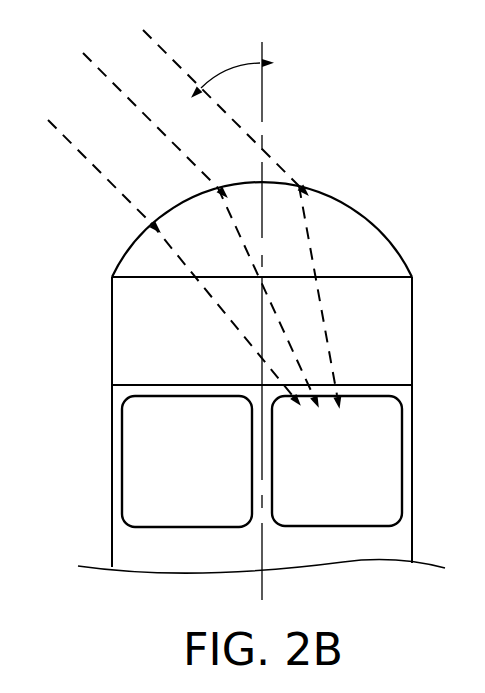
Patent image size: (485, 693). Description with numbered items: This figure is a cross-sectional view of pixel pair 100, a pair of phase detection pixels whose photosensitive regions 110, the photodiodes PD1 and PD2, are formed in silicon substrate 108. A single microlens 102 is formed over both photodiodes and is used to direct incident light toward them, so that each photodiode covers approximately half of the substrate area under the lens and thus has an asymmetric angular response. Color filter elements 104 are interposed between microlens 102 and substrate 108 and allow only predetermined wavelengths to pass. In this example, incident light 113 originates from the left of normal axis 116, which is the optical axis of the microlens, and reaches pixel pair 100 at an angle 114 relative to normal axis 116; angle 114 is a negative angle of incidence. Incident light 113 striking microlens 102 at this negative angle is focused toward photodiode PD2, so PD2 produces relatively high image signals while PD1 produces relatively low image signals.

The pixel pair 100 is at (375, 151).
The microlens 102 is at (336, 212).
The color filter elements 104 is at (128, 333).
The silicon substrate 108 is at (122, 545).
The photosensitive regions 110 is at (138, 450).
The incident light 113 is at (117, 188).
The angle 114 is at (224, 64).
The normal axis 116 is at (263, 80).